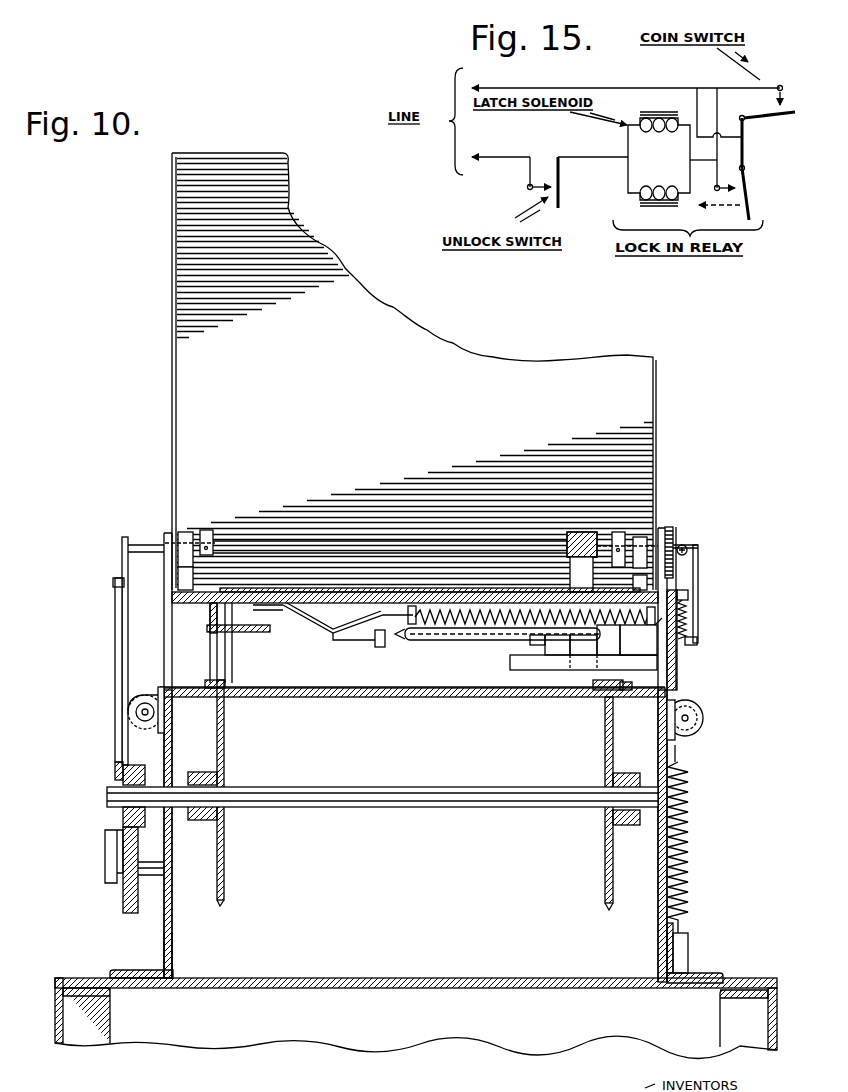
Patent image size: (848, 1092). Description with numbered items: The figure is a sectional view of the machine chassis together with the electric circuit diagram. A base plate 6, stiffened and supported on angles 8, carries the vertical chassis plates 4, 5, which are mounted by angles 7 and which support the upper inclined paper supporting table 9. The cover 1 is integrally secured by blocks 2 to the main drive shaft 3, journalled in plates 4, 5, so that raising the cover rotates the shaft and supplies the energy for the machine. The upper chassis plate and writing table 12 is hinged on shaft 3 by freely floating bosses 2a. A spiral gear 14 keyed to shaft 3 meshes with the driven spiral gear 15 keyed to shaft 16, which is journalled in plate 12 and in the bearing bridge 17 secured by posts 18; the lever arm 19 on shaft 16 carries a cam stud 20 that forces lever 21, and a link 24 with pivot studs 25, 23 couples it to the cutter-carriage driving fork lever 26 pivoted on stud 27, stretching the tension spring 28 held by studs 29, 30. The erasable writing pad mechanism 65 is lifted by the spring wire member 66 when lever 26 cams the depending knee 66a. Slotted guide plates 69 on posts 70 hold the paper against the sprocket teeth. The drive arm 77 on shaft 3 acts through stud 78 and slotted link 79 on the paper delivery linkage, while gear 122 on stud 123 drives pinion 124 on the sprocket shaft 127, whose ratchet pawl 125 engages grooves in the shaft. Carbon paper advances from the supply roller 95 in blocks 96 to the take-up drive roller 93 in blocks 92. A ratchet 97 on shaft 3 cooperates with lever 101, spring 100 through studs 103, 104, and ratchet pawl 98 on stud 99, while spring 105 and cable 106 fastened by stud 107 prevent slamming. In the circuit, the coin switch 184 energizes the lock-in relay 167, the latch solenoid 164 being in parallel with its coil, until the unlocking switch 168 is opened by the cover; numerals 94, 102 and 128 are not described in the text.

In FIG. 10, the cover 1 is at (282, 227).
In FIG. 10, the blocks 2 is at (228, 512).
In FIG. 10, the bosses 2a is at (193, 583).
In FIG. 10, the main drive shaft 3 is at (265, 541).
In FIG. 10, the vertical chassis plate 4 is at (167, 533).
In FIG. 10, the vertical chassis plate 5 is at (662, 528).
In FIG. 10, the base plate 6 is at (60, 978).
In FIG. 10, the angles 7 is at (165, 933).
In FIG. 10, the angles 8 is at (90, 988).
In FIG. 10, the upper inclined paper supporting table 9 is at (443, 698).
In FIG. 10, the upper chassis plate and writing table 12 is at (325, 592).
In FIG. 10, the spiral gear 14 is at (580, 532).
In FIG. 10, the driven spiral gear 15 is at (569, 560).
In FIG. 10, the shaft 16 is at (594, 582).
In FIG. 10, the bearing bridge 17 is at (535, 672).
In FIG. 10, the posts 18 is at (510, 650).
In FIG. 10, the lever arm 19 is at (608, 640).
In FIG. 10, the cam stud 20 is at (557, 646).
In FIG. 10, the lever 21 is at (583, 647).
In FIG. 10, the pivot stud 23 is at (545, 655).
In FIG. 10, the link 24 is at (462, 641).
In FIG. 10, the pivot stud 25 is at (381, 648).
In FIG. 10, the cutter-carriage driving fork lever 26 is at (253, 634).
In FIG. 10, the stud 27 is at (447, 641).
In FIG. 10, the tension spring 28 is at (478, 606).
In FIG. 10, the stud 29 is at (412, 606).
In FIG. 10, the stud 30 is at (650, 630).
In FIG. 10, the erasable writing pad mechanism 65 is at (278, 590).
In FIG. 10, the spring wire member 66 is at (308, 617).
In FIG. 10, the depending knee 66a is at (333, 636).
In FIG. 10, the slotted guide plates 69 is at (207, 680).
In FIG. 10, the posts 70 is at (213, 642).
In FIG. 10, the drive arm 77 is at (128, 574).
In FIG. 10, the stud 78 is at (128, 588).
In FIG. 10, the slotted link 79 is at (115, 597).
In FIG. 10, the blocks 92 is at (164, 720).
In FIG. 10, the take-up drive roller 93 is at (145, 696).
In FIG. 10, the belt top run 94 is at (303, 686).
In FIG. 10, the supply roller 95 is at (704, 716).
In FIG. 10, the blocks 96 is at (673, 718).
In FIG. 10, the ratchet 97 is at (672, 530).
In FIG. 10, the ratchet pawl 98 is at (677, 656).
In FIG. 10, the stud 99 is at (638, 664).
In FIG. 10, the spring 100 is at (688, 613).
In FIG. 10, the lever 101 is at (698, 572).
In FIG. 10, the pin 102 is at (698, 548).
In FIG. 10, the stud 103 is at (697, 640).
In FIG. 10, the stud 104 is at (690, 593).
In FIG. 10, the spring 105 is at (690, 798).
In FIG. 10, the cable 106 is at (680, 752).
In FIG. 10, the stud 107 is at (688, 548).
In FIG. 10, the gear 122 is at (123, 900).
In FIG. 10, the stud 123 is at (165, 873).
In FIG. 10, the pinion 124 is at (130, 765).
In FIG. 10, the ratchet pawl 125 is at (117, 765).
In FIG. 10, the sprocket shaft 127 is at (107, 792).
In FIG. 10, the shaft bracket 128 is at (224, 750).
In FIG. 15, the latch solenoid 164 is at (668, 112).
In FIG. 15, the lock-in relay 167 is at (642, 203).
In FIG. 15, the unlocking switch 168 is at (582, 193).
In FIG. 15, the coin switch 184 is at (781, 86).